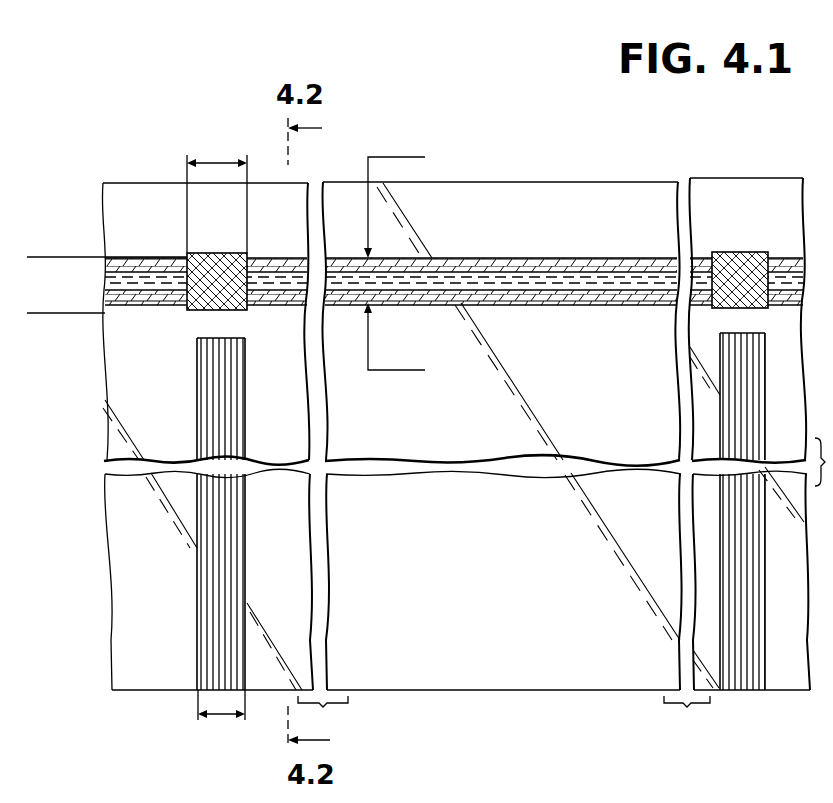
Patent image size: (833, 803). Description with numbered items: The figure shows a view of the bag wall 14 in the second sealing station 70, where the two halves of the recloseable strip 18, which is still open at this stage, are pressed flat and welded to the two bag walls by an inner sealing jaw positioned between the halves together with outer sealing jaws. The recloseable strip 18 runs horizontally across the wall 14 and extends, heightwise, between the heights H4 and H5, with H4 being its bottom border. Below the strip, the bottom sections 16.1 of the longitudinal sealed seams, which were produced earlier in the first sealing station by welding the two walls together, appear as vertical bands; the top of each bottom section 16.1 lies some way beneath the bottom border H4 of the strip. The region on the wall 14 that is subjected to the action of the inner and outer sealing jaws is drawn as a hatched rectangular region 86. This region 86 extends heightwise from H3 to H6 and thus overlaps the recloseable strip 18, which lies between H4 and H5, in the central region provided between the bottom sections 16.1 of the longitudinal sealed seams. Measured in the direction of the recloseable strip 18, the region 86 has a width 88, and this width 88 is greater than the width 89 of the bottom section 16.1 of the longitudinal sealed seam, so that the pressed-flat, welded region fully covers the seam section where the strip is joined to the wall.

The second sealing station 70 is at (511, 131).
The wall 14 is at (507, 590).
The recloseable strip 18 is at (544, 255).
The hatched rectangular region 86 is at (216, 255).
The bottom section of the longitudinal sealed seam 16.1 is at (208, 637).
The width of the region 88 is at (211, 160).
The width of the bottom section 89 is at (218, 717).
The height H3 is at (66, 299).
The height H4 is at (394, 350).
The height H5 is at (395, 194).
The height H6 is at (107, 246).